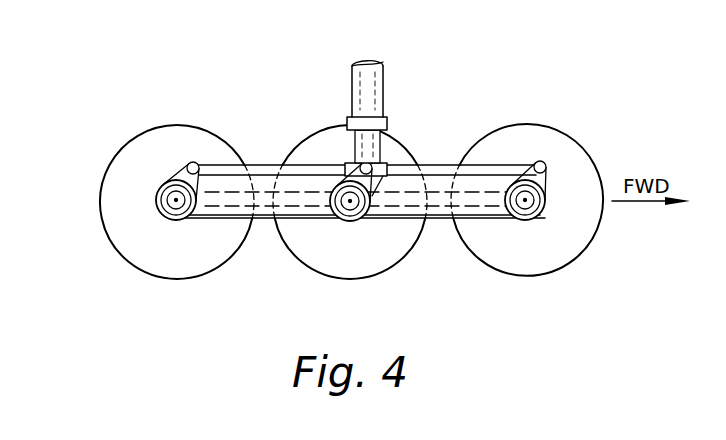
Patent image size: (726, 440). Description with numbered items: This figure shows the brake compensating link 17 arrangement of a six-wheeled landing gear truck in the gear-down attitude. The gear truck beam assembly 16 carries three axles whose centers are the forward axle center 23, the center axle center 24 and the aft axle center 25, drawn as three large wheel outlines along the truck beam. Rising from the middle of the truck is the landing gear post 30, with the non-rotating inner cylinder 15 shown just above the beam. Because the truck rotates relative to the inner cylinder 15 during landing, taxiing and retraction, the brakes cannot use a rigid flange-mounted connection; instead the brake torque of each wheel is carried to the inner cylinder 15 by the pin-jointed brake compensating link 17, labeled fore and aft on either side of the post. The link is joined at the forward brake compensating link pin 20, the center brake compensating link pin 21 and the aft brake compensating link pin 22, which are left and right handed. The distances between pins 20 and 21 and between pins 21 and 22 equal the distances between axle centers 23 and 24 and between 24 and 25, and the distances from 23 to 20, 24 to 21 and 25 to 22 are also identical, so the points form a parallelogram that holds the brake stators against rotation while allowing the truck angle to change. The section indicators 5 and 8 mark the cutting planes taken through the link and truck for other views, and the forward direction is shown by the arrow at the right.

The section line 5- 5 is at (265, 75).
The section line 8- 8 is at (75, 105).
The inner cylinder 15 is at (355, 143).
The gear truck beam assembly 16 is at (384, 215).
The brake compensating link 17 is at (258, 165).
The brake compensating link pin (forward) 20 is at (546, 170).
The brake compensating link pin (center) 21 is at (385, 182).
The brake compensating link pin (aft) 22 is at (193, 162).
The axle center (forward) 23 is at (527, 203).
The axle center (center) 24 is at (352, 212).
The axle center (aft) 25 is at (176, 202).
The landing gear post 30 is at (392, 76).